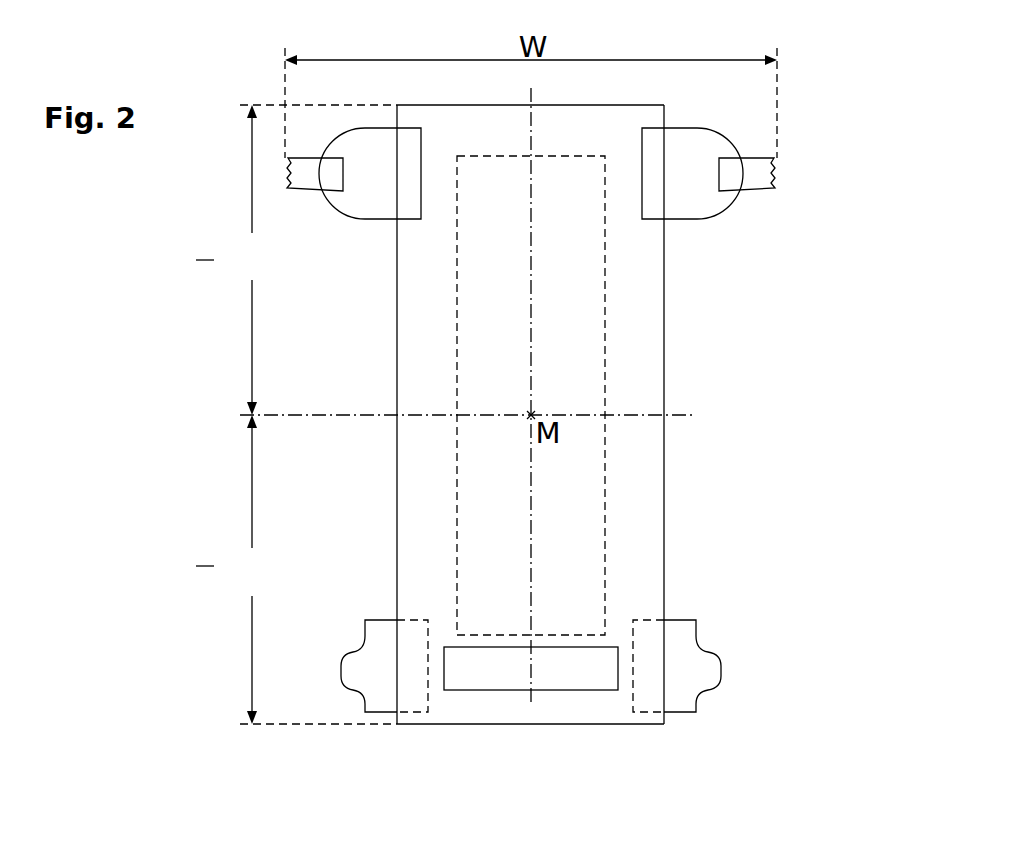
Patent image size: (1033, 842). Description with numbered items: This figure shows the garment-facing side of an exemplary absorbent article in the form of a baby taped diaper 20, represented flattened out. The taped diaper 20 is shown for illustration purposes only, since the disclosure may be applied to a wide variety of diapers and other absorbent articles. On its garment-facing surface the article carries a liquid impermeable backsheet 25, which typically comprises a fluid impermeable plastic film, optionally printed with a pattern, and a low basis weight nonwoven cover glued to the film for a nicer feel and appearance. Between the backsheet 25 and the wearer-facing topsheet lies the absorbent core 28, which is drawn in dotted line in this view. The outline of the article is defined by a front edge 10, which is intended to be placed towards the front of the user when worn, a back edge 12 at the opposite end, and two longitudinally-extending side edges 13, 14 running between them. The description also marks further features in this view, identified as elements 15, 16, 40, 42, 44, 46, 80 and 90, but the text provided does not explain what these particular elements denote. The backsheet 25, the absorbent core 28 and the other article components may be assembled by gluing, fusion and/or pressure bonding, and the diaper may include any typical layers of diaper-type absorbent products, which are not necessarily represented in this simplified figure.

The front edge 10 is at (610, 724).
The back edge 12 is at (637, 105).
The longitudinally-extending side edge 13 is at (397, 438).
The longitudinally-extending side edge 14 is at (665, 514).
The rear half of article 15 is at (233, 569).
The front half of article 16 is at (233, 260).
The taped diaper 20 is at (748, 308).
The backsheet 25 is at (455, 138).
The absorbent core 28 is at (605, 356).
The fastening tab / ear 40 is at (367, 210).
The fastening element 42 is at (305, 183).
The landing zone 44 is at (457, 691).
The elastic side panel 46 is at (360, 672).
The rear waist band 80 is at (527, 691).
The transverse center line 90 is at (685, 417).